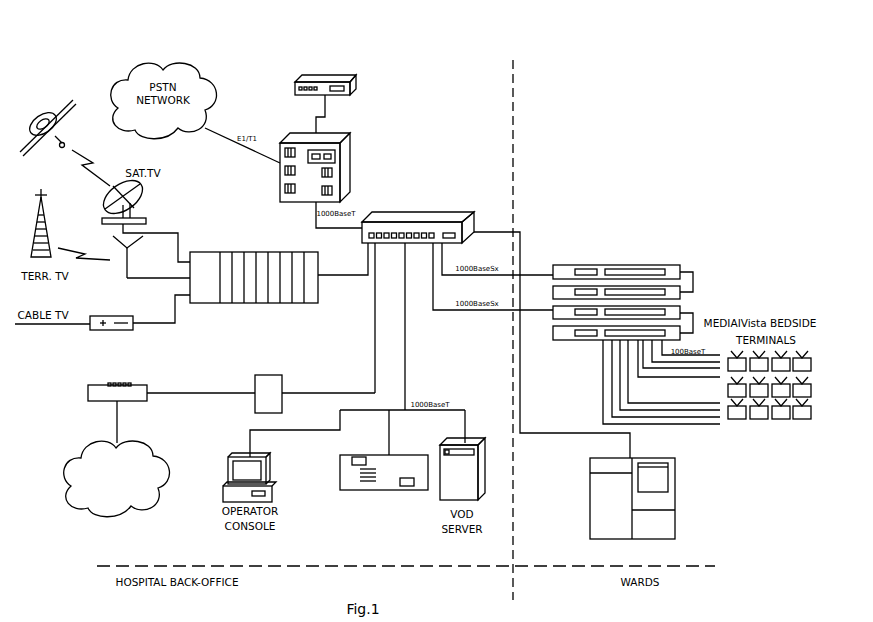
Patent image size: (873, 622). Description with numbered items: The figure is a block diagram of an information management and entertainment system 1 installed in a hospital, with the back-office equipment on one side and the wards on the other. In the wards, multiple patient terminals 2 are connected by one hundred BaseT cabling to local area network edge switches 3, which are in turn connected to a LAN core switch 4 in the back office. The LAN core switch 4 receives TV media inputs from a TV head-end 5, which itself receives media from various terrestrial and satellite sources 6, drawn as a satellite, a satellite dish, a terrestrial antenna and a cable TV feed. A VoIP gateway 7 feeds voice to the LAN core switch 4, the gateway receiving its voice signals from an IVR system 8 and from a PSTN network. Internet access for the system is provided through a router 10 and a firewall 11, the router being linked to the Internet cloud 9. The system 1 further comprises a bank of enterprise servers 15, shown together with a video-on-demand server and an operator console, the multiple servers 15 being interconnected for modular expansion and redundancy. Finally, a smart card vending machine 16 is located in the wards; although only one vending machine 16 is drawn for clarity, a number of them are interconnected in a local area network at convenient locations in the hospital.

The entertainment system 1 is at (243, 61).
The patient terminals 2 is at (823, 379).
The LAN edge switches 3 is at (718, 272).
The LAN core switch 4 is at (466, 216).
The TV head-end 5 is at (200, 252).
The terrestrial and satellite sources 6 is at (52, 151).
The VoIP gateway 7 is at (348, 140).
The IVR system 8 is at (357, 82).
The internet 9 is at (74, 521).
The router 10 is at (88, 391).
The firewall 11 is at (266, 375).
The enterprise servers 15 is at (393, 548).
The smart card vending machines 16 is at (676, 486).